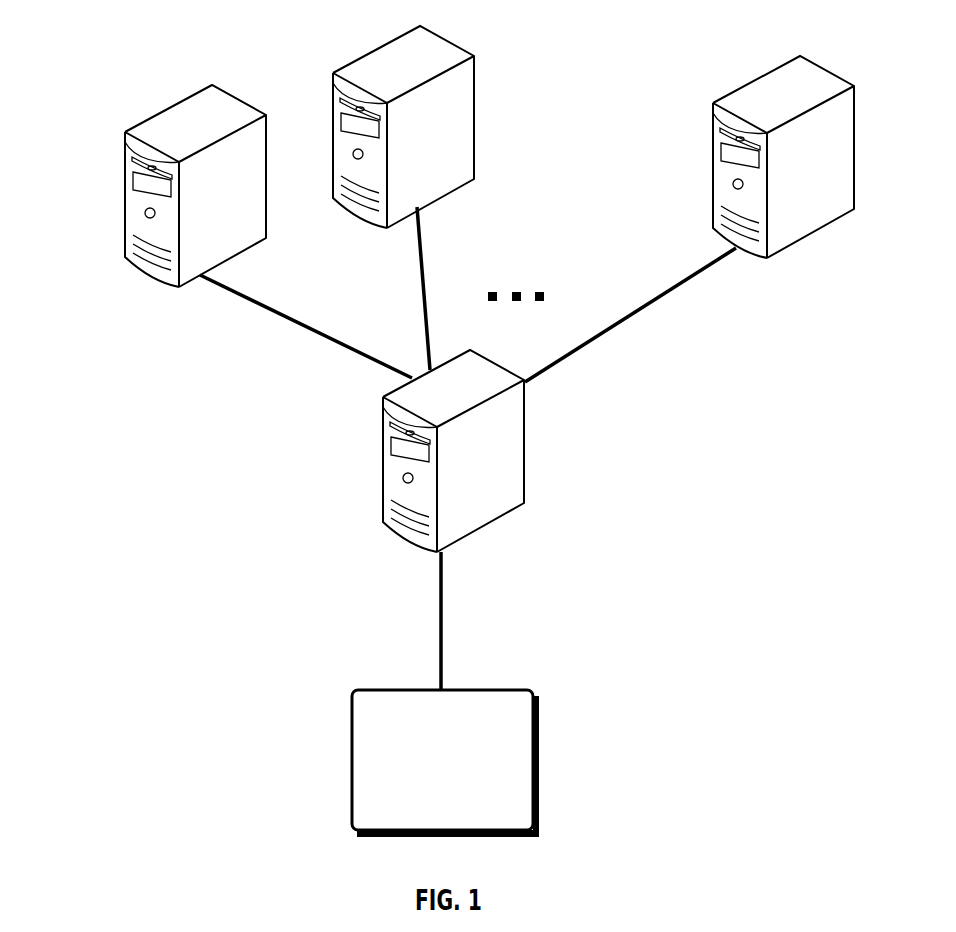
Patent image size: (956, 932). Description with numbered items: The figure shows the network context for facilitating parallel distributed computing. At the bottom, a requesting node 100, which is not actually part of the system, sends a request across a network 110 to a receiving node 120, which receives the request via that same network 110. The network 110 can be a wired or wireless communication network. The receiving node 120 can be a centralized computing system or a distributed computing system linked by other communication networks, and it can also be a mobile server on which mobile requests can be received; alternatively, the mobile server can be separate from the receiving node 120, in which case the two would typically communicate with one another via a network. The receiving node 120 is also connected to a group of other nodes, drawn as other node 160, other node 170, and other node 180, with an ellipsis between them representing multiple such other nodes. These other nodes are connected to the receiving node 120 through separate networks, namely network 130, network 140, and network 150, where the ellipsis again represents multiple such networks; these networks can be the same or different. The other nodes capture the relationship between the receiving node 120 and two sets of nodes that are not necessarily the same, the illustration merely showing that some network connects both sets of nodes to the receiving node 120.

The requesting node 100 is at (445, 763).
The network 110 is at (440, 578).
The receiving node 120 is at (383, 455).
The network 130 is at (292, 322).
The network 140 is at (417, 247).
The network 150 is at (615, 330).
The other node 160 is at (123, 148).
The other node 170 is at (332, 90).
The other node 180 is at (713, 122).